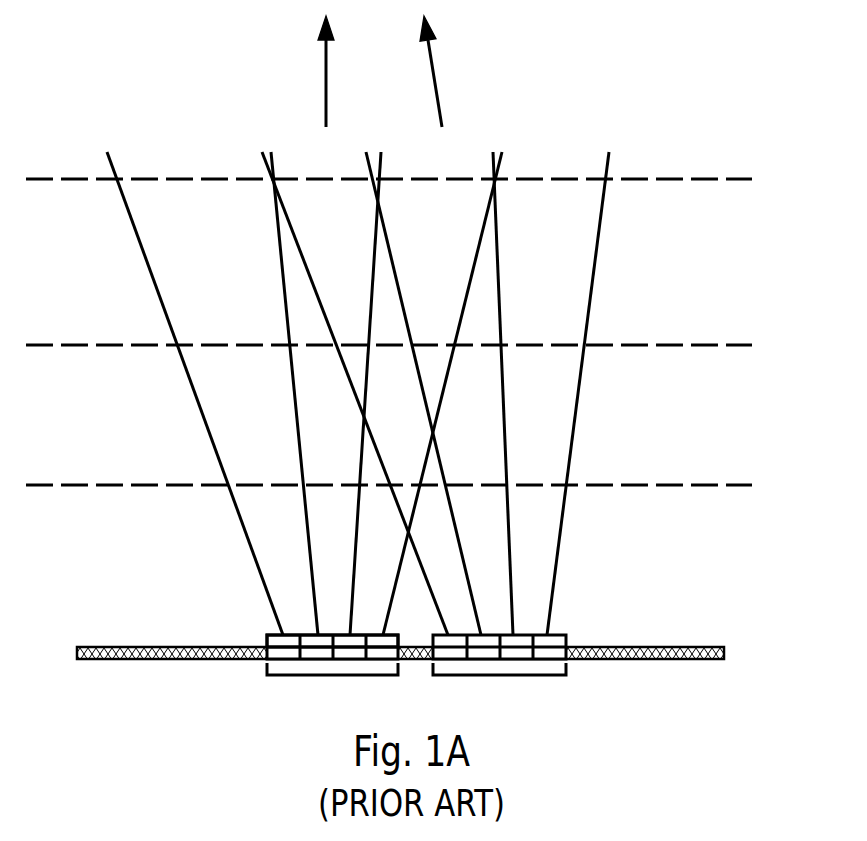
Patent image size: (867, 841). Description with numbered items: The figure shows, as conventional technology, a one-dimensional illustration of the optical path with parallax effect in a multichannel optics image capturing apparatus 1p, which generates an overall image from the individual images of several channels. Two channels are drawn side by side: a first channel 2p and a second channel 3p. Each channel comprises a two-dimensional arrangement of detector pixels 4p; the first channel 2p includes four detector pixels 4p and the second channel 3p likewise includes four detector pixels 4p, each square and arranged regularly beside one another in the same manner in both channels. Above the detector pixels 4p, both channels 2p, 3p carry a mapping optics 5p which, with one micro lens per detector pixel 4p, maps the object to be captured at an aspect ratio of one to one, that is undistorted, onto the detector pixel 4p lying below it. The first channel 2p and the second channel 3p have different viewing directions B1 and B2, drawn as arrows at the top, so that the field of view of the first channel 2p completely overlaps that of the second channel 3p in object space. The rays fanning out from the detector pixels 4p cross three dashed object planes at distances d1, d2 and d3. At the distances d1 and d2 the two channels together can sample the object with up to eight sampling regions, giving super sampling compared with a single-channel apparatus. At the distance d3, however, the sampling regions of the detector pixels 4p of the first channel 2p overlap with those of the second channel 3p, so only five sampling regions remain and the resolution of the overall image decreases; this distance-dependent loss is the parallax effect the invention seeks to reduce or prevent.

The multichannel optics image capturing apparatus 1p is at (436, 647).
The first channel 2p is at (267, 675).
The second channel 3p is at (566, 675).
The detector pixels 4p is at (267, 653).
The mapping optics 5p is at (267, 640).
The distance d1 is at (411, 486).
The distance d2 is at (411, 345).
The distance d3 is at (411, 179).
The viewing direction B1 is at (340, 71).
The viewing direction B2 is at (447, 71).